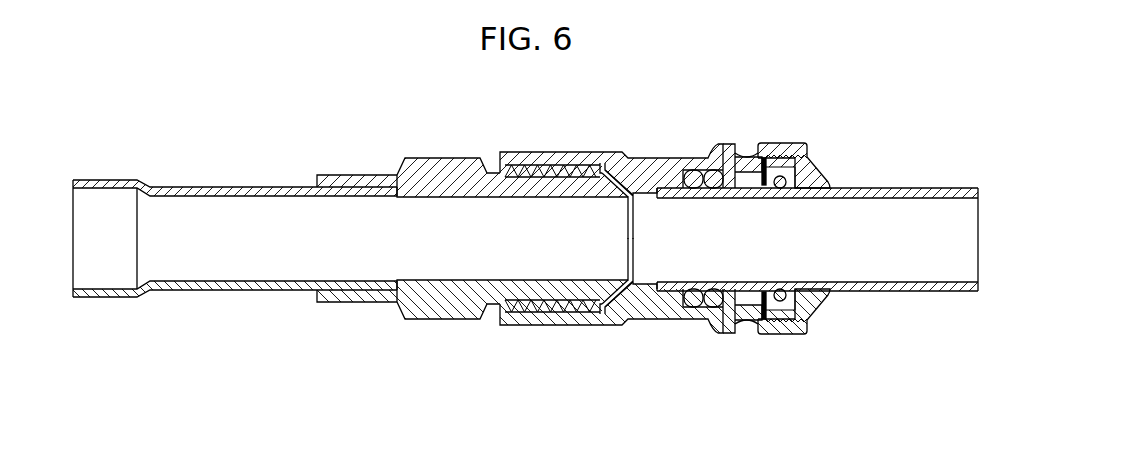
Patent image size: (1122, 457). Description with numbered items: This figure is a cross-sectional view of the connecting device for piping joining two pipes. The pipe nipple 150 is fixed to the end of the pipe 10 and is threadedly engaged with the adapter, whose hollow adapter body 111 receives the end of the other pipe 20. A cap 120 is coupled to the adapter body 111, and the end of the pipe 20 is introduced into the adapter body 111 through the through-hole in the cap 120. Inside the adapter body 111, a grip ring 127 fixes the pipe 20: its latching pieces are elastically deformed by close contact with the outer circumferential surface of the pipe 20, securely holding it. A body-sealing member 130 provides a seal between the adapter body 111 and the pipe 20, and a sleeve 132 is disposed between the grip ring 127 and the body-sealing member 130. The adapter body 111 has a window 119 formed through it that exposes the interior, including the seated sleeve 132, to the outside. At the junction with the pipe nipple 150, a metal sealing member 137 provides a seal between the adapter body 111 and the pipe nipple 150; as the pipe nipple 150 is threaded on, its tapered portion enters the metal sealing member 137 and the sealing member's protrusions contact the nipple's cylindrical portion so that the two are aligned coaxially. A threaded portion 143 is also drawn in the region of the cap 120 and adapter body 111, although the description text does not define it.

The pipe 10 is at (253, 187).
The pipe 20 is at (922, 188).
The adapter body 111 is at (653, 156).
The window 119 is at (747, 154).
The cap 120 is at (838, 149).
The grip ring 127 is at (751, 303).
The body-sealing member 130 is at (718, 169).
The sleeve 132 is at (723, 334).
The metal sealing member 137 is at (623, 303).
The threaded portion 143 is at (778, 165).
The pipe nipple 150 is at (468, 338).